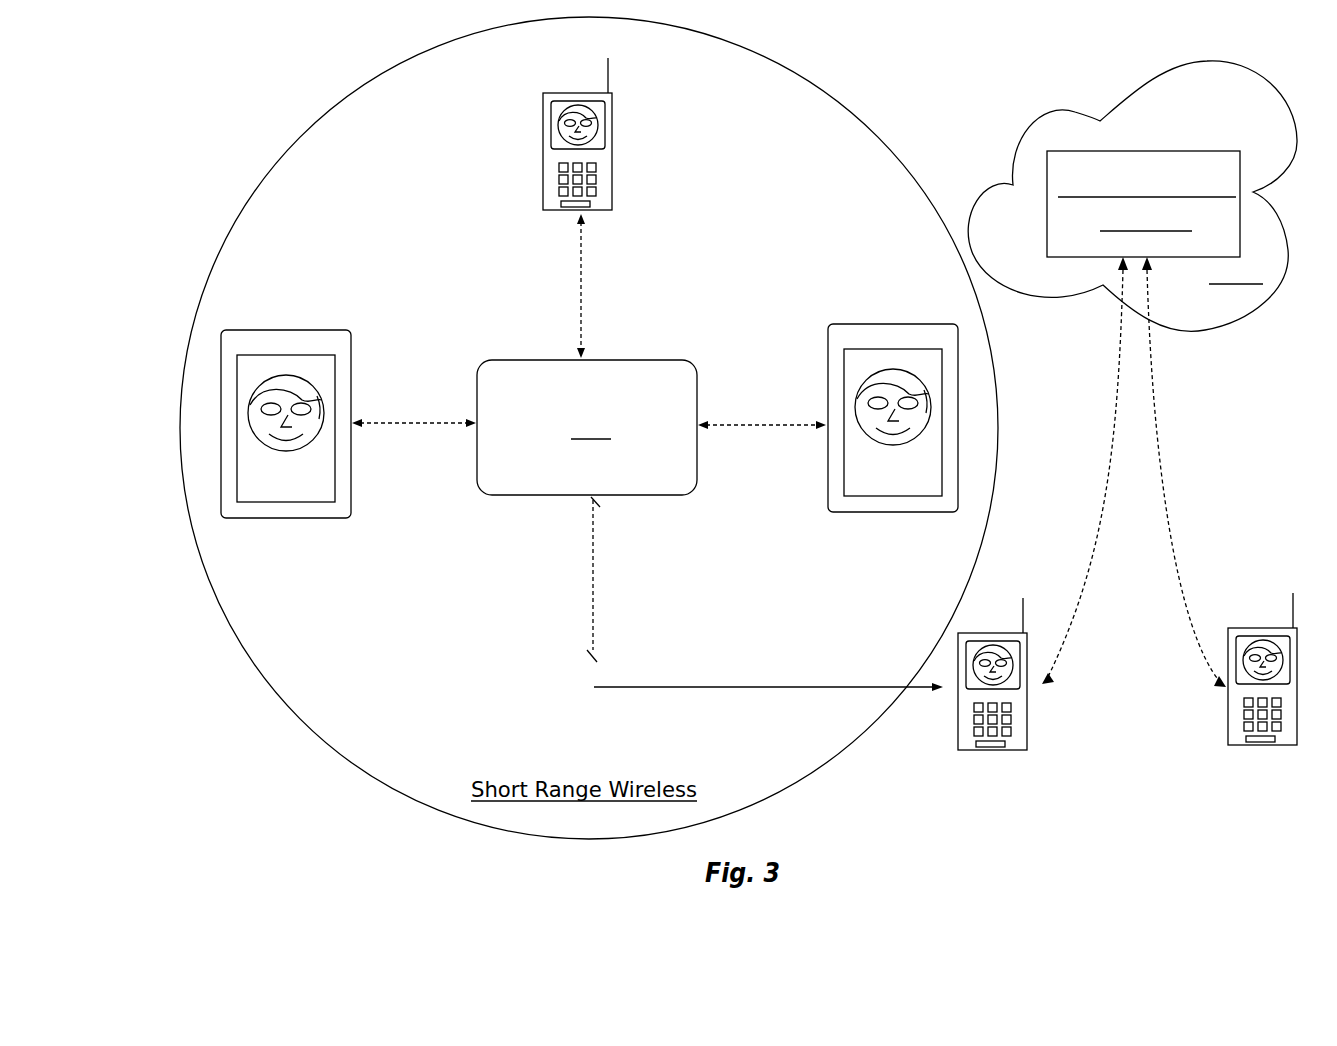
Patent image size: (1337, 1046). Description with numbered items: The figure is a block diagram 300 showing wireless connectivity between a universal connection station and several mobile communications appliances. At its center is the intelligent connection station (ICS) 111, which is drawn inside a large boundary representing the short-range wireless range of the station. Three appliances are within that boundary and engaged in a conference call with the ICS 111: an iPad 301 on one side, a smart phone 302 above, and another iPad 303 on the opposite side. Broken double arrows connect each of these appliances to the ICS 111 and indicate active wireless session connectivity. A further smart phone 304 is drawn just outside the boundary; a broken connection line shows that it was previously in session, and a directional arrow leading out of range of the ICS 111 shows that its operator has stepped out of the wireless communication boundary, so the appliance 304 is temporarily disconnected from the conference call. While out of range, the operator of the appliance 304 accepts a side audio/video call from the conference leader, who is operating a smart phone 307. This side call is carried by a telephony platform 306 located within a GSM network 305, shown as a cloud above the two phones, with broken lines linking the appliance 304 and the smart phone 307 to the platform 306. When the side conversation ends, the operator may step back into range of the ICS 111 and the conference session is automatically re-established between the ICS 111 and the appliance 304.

The block diagram 300 is at (208, 164).
The intelligent connection station 111 is at (547, 358).
The iPad 301 is at (285, 519).
The smart phone 302 is at (543, 163).
The iPad 303 is at (893, 323).
The smart phone 304 is at (958, 722).
The GSM network 305 is at (1097, 108).
The telephony platform 306 is at (1150, 150).
The smart phone 307 is at (1228, 714).